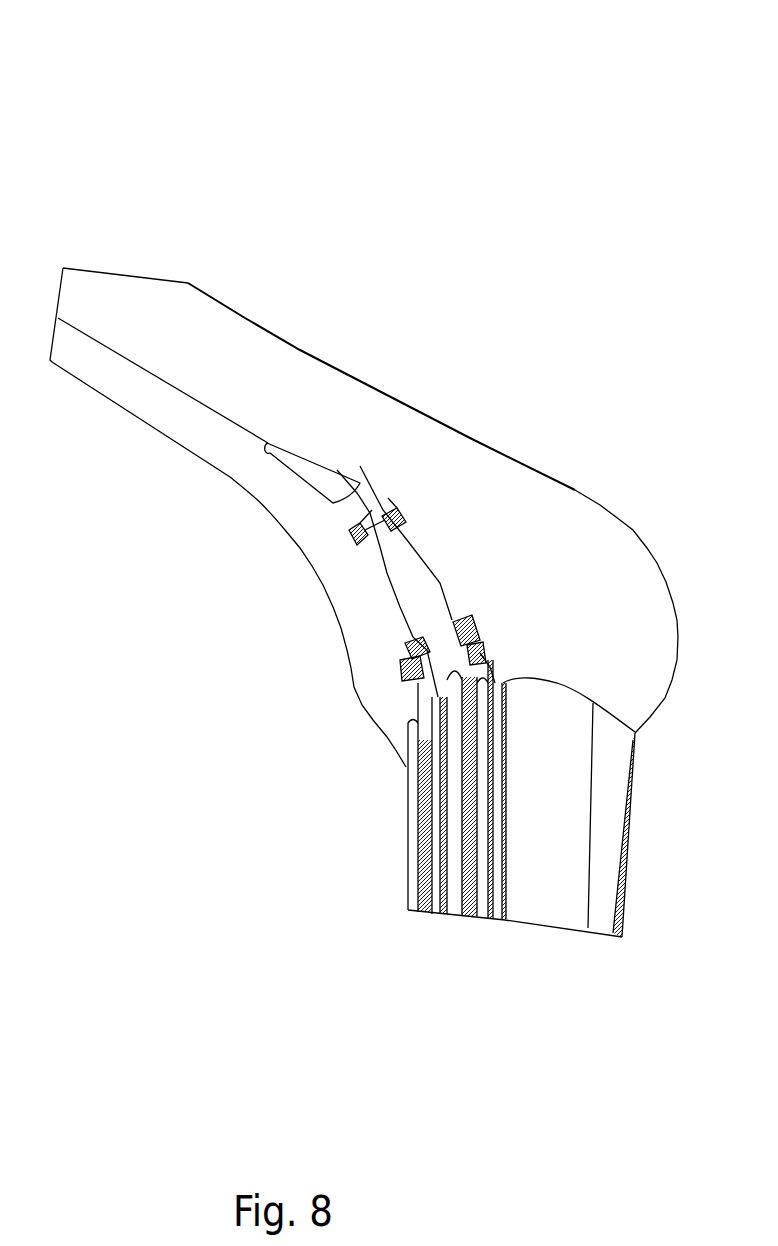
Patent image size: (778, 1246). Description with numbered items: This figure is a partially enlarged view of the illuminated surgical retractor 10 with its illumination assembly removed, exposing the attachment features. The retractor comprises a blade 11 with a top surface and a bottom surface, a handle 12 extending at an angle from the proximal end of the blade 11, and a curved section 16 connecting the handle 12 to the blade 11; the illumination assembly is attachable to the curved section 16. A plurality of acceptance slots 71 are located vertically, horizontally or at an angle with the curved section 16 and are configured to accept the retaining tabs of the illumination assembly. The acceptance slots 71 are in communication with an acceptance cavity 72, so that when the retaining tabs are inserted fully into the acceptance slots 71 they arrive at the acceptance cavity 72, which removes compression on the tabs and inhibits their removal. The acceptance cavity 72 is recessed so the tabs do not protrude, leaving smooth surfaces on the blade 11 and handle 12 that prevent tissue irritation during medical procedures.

The illuminated surgical retractor 10 is at (64, 51).
The blade 11 is at (262, 345).
The handle 12 is at (563, 897).
The curved section 16 is at (627, 547).
The acceptance slots 71 is at (350, 532).
The acceptance cavity 72 is at (413, 517).